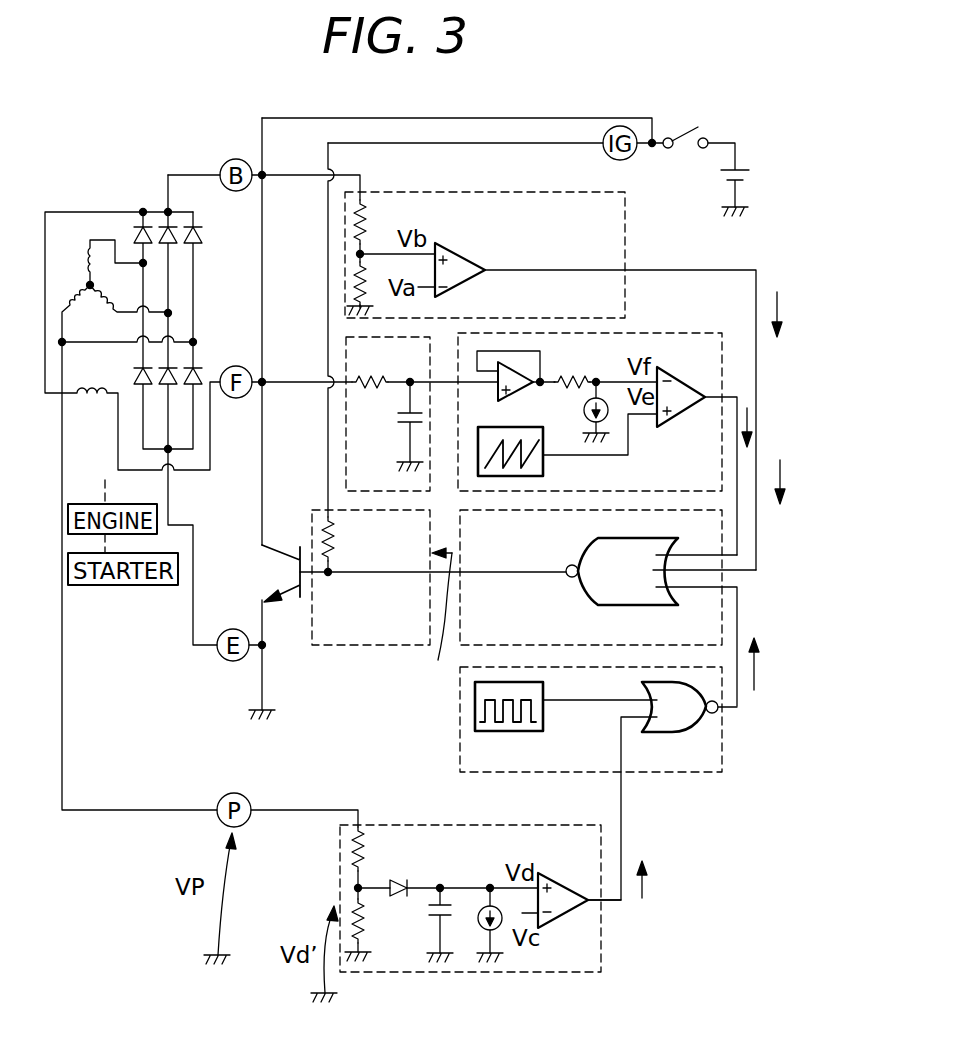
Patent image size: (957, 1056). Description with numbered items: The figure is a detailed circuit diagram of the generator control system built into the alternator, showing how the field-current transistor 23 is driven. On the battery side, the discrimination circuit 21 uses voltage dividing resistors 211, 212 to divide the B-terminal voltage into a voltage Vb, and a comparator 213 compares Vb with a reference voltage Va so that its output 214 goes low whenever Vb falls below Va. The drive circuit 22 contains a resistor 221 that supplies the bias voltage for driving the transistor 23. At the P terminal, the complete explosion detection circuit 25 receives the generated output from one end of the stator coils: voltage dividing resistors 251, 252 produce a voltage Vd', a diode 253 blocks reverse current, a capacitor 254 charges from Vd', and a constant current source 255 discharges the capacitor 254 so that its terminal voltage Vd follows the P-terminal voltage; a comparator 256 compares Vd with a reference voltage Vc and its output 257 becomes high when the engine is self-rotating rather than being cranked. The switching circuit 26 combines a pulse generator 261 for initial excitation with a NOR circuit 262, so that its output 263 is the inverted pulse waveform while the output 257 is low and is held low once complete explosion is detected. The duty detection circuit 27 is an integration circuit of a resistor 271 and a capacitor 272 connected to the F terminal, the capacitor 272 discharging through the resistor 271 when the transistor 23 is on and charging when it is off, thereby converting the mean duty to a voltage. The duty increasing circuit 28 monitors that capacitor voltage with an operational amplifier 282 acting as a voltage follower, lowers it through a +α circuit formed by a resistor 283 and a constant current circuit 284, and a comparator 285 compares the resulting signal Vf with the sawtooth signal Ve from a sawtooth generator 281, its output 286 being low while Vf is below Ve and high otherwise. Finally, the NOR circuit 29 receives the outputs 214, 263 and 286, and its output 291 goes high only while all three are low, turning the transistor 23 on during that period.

The discrimination circuit 21 is at (627, 220).
The voltage dividing resistor 211 is at (368, 226).
The voltage dividing resistor 212 is at (355, 272).
The comparator 213 is at (450, 250).
The output of the comparator 214 is at (780, 303).
The drive circuit 22 is at (360, 647).
The resistor 221 is at (338, 540).
The transistor 23 is at (284, 602).
The complete explosion detection circuit 25 is at (447, 974).
The voltage dividing resistor 251 is at (366, 842).
The voltage dividing resistor 252 is at (367, 918).
The diode 253 is at (398, 880).
The capacitor 254 is at (431, 918).
The constant current source 255 is at (479, 929).
The comparator 256 is at (568, 915).
The output of the comparator 257 is at (645, 890).
The switching circuit 26 is at (691, 774).
The pulse generator 261 is at (528, 734).
The NOR circuit 262 is at (700, 730).
The output of the switching circuit 263 is at (756, 678).
The duty detection circuit 27 is at (345, 405).
The resistor 271 is at (377, 376).
The capacitor 272 is at (398, 416).
The duty increasing circuit 28 is at (692, 330).
The sawtooth generator 281 is at (545, 469).
The operational amplifier 282 is at (538, 378).
The resistor 283 is at (598, 368).
The constant current circuit 284 is at (583, 407).
The comparator 285 is at (690, 386).
The output of the comparator 286 is at (751, 418).
The NOR circuit 29 is at (724, 608).
The output of the NOR circuit 291 is at (428, 622).